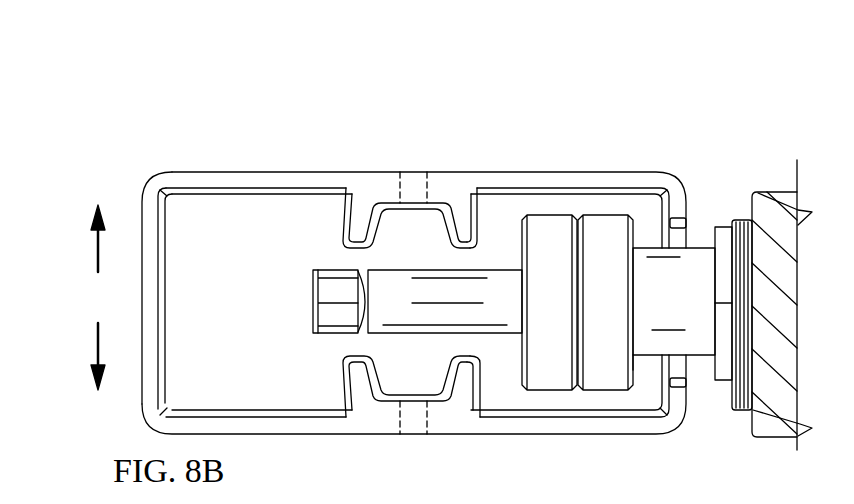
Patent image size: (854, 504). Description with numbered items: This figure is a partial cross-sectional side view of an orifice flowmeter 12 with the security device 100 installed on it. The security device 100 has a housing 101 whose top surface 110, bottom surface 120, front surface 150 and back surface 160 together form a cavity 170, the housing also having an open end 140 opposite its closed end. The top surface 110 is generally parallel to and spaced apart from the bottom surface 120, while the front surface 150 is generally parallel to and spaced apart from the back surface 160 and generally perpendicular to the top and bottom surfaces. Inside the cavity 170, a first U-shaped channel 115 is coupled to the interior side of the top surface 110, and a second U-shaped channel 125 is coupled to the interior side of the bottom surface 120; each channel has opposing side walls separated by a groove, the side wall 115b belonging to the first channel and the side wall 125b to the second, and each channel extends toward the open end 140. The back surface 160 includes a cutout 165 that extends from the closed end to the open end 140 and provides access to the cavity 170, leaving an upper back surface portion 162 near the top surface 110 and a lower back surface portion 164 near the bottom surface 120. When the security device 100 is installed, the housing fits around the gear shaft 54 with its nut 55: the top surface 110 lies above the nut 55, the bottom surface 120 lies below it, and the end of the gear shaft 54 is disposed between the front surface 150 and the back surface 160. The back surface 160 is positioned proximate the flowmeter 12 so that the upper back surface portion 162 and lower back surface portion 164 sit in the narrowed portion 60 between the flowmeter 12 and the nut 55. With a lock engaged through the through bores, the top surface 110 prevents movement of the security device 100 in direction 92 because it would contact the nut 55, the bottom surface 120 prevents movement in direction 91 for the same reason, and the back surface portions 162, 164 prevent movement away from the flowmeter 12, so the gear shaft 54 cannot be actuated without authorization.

The security device 100 is at (325, 83).
The housing 101 is at (189, 158).
The top surface 110 is at (273, 172).
The bottom surface 120 is at (363, 434).
The open end 140 is at (293, 434).
The front surface 150 is at (141, 300).
The cavity 170 is at (235, 317).
The first U-shaped channel 115 is at (378, 200).
The side wall 115b is at (478, 217).
The second U-shaped channel 125 is at (378, 398).
The side wall 125b is at (482, 413).
The upper back surface portion 162 is at (687, 214).
The lower back surface portion 164 is at (688, 392).
The gear shaft 54 is at (312, 315).
The nut 55 is at (522, 297).
The back surface 160 is at (687, 370).
The cutout 165 is at (660, 372).
The narrowed portion 60 is at (704, 236).
The flowmeter 12 is at (778, 178).
The direction 91 is at (95, 239).
The direction 92 is at (95, 358).